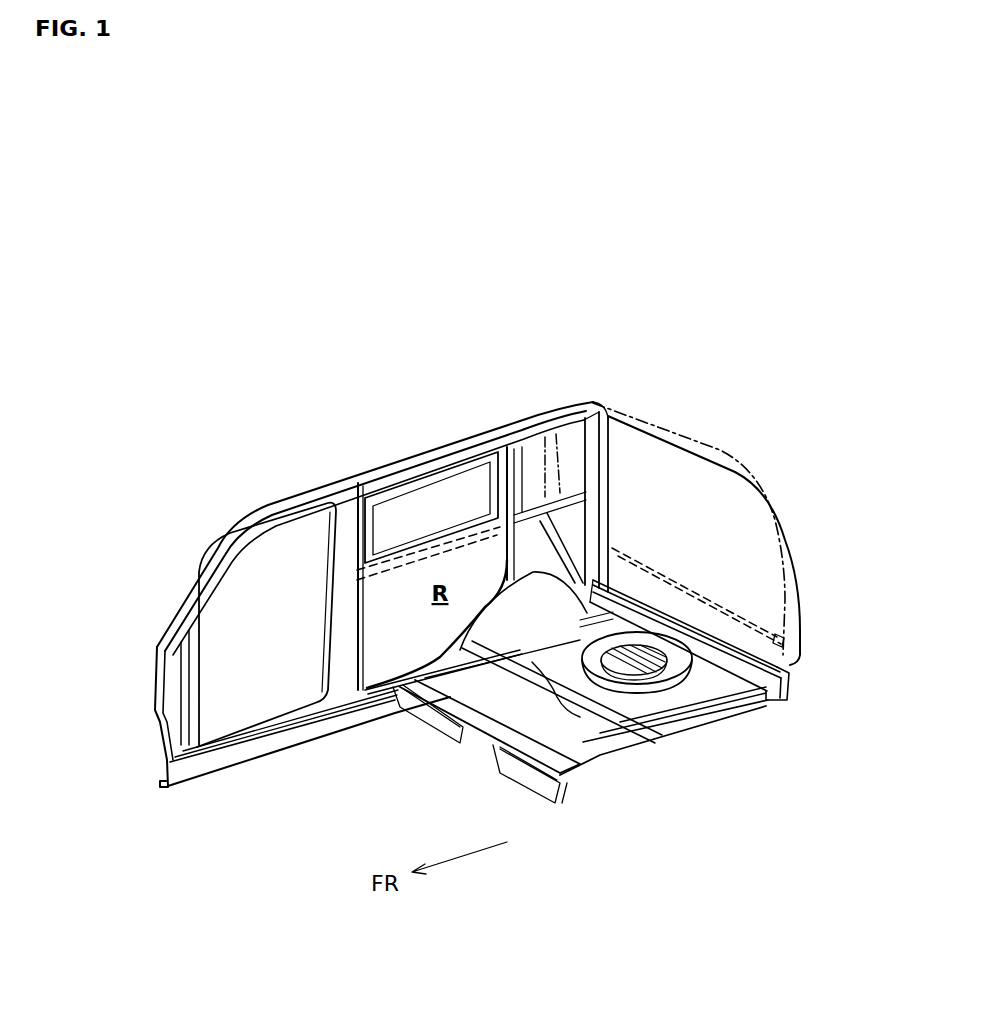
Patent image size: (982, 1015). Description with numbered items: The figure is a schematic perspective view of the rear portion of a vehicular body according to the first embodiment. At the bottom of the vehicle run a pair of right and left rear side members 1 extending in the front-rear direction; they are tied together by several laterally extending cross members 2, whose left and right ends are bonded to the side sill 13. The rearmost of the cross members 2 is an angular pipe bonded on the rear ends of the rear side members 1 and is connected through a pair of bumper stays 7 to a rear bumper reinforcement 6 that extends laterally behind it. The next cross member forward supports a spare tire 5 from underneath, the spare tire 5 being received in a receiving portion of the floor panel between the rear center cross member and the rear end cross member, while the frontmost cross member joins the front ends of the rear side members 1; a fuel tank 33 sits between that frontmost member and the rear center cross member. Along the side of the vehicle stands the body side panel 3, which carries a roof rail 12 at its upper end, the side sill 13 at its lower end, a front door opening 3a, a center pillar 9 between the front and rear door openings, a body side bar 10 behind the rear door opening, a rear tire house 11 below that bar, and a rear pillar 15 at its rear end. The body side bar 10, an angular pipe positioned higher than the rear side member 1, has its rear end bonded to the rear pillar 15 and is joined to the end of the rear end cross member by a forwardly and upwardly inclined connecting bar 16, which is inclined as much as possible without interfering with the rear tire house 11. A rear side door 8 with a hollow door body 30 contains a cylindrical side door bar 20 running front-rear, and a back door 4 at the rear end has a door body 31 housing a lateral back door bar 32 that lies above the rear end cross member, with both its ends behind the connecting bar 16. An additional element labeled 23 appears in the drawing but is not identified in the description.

The rear side member 1 is at (553, 677).
The cross members 2 is at (629, 757).
The body side panel 3 is at (150, 740).
The front door opening 3a is at (220, 565).
The back door 4 is at (680, 438).
The spare tire 5 is at (690, 715).
The rear bumper reinforcement 6 is at (787, 683).
The bumper stays 7 is at (640, 593).
The rear side door 8 is at (445, 475).
The center pillar 9 is at (350, 487).
The body side bar 10 is at (510, 465).
The rear tire house 11 is at (512, 562).
The roof rail 12 is at (290, 500).
The side sill 13 is at (215, 763).
The rear pillar 15 is at (571, 462).
The connecting bar 16 is at (563, 543).
The side door bar 20 is at (396, 572).
The rear corner pillar 23 is at (584, 420).
The door body 30 is at (413, 643).
The door body 31 is at (723, 463).
The back door bar 32 is at (703, 590).
The fuel tank 33 is at (563, 732).